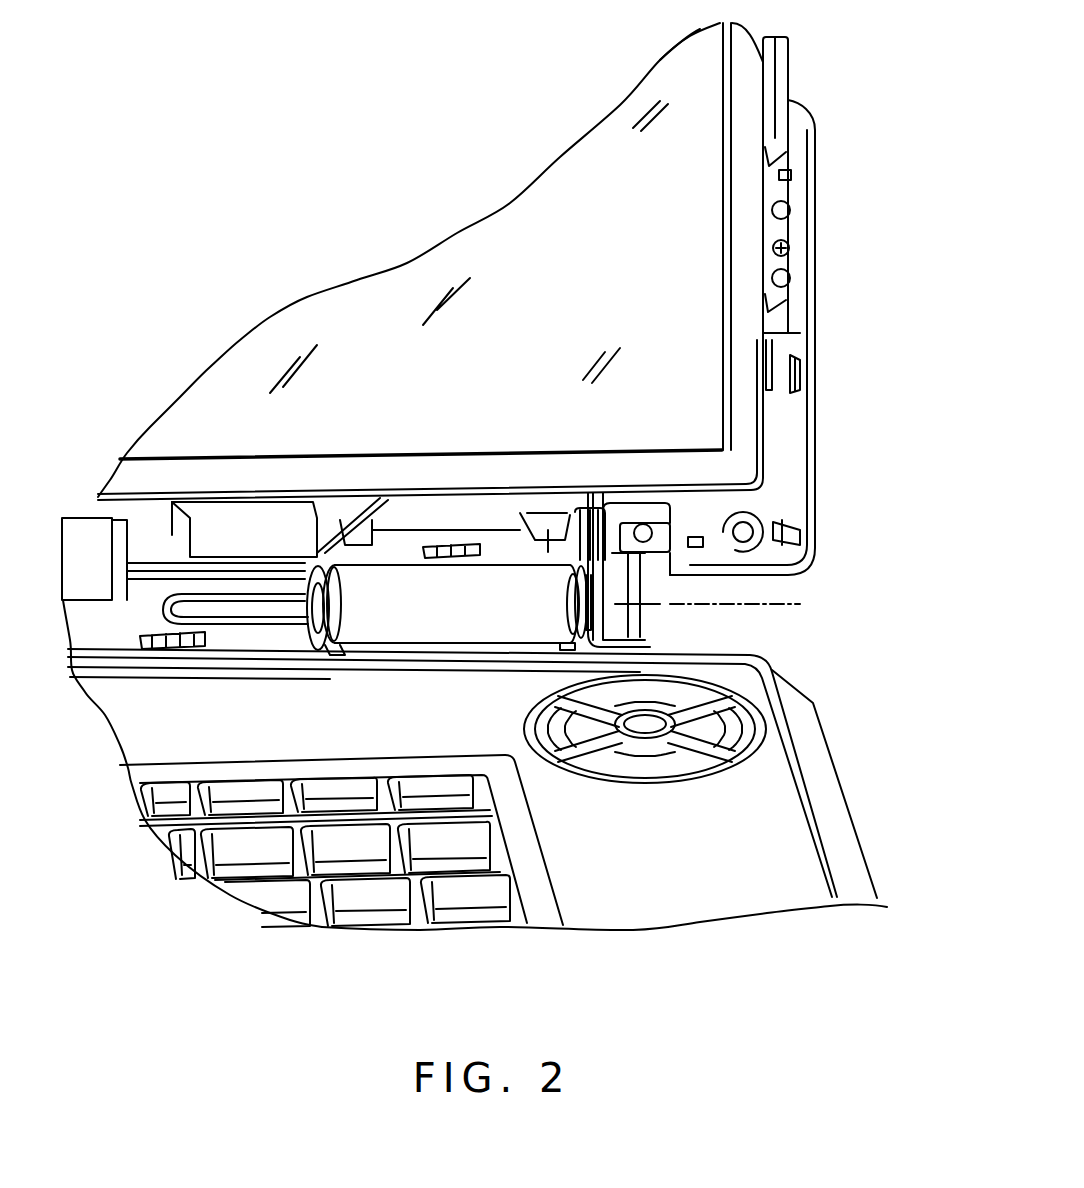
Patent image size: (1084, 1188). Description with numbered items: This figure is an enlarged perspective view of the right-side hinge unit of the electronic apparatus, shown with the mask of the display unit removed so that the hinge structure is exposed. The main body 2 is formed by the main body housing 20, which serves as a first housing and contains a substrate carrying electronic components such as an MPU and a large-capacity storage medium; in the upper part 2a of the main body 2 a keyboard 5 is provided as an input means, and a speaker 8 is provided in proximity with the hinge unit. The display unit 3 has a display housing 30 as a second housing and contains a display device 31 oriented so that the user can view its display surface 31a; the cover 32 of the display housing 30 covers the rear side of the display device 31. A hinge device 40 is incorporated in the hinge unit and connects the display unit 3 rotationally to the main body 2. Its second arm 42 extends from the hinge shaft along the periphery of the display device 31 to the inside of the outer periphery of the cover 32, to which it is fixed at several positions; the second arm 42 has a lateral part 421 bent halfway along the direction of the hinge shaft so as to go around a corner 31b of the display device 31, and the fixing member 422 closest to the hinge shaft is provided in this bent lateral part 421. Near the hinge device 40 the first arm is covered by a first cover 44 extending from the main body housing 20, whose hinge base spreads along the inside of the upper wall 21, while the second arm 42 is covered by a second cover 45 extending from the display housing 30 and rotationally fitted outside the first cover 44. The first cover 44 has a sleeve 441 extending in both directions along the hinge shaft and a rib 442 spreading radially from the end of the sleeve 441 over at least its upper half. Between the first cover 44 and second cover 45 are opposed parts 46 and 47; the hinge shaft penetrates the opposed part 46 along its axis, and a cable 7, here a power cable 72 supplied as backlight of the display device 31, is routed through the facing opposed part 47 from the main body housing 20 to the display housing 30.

The main body 2 is at (850, 766).
The upper part of the main body 2a is at (549, 938).
The display unit 3 is at (803, 56).
The keyboard 5 is at (517, 868).
The cable 7 is at (222, 630).
The speaker 8 is at (707, 722).
The main body housing 20 is at (757, 915).
The upper wall 21 is at (795, 850).
The display housing 30 is at (818, 340).
The display device 31 is at (489, 224).
The display surface 31a is at (622, 104).
The corner of the display device 31b is at (737, 460).
The cover 32 is at (815, 197).
The hinge device 40 is at (577, 505).
The second arm 42 is at (787, 135).
The lateral part 421 is at (645, 502).
The fixing member 422 is at (760, 531).
The first cover 44 is at (445, 612).
The sleeve 441 is at (323, 632).
The rib 442 is at (338, 606).
The second cover 45 is at (638, 616).
The opposed part 46 is at (563, 652).
The opposed part 47 is at (342, 654).
The power cable 72 is at (272, 626).